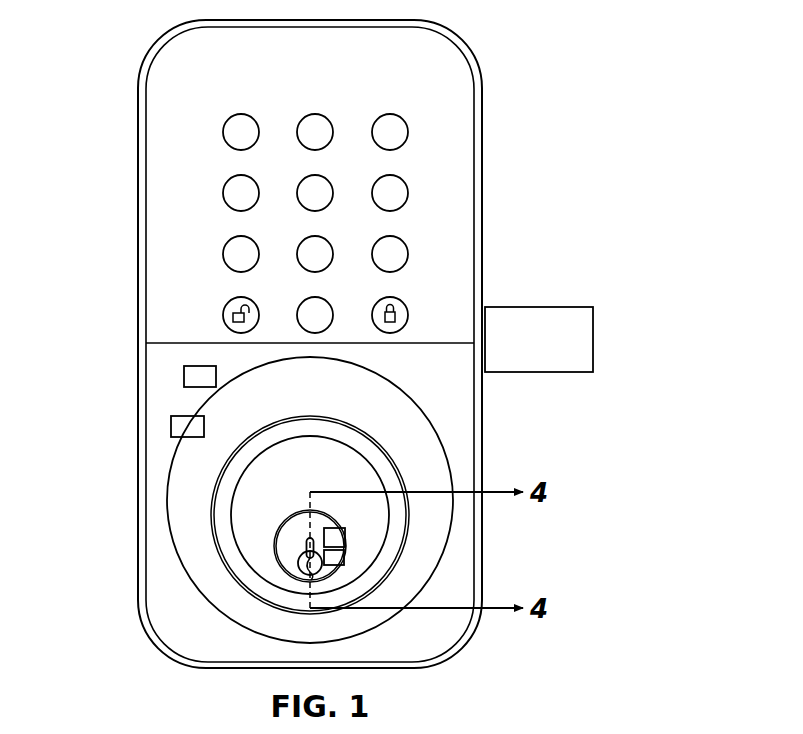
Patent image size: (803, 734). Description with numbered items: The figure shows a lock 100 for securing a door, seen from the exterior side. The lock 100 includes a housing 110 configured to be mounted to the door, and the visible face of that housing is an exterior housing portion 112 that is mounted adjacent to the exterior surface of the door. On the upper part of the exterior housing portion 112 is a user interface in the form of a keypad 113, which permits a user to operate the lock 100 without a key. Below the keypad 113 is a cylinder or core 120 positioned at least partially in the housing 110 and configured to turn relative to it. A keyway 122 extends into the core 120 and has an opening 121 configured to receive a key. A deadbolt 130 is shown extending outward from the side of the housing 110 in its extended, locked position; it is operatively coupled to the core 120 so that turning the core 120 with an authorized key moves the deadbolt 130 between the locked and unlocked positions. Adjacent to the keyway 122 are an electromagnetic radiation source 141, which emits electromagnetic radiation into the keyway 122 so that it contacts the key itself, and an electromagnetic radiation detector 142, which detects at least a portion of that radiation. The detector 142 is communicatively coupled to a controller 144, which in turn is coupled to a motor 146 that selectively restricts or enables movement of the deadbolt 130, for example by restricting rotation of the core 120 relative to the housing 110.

The lock 100 is at (510, 48).
The housing 110 is at (467, 128).
The exterior housing portion 112 is at (450, 202).
The keypad 113 is at (408, 250).
The deadbolt 130 is at (593, 347).
The controller 144 is at (183, 373).
The motor 146 is at (170, 427).
The core 120 is at (300, 527).
The opening 121 is at (298, 565).
The keyway 122 is at (303, 564).
The electromagnetic radiation source 141 is at (345, 529).
The electromagnetic radiation detector 142 is at (345, 562).